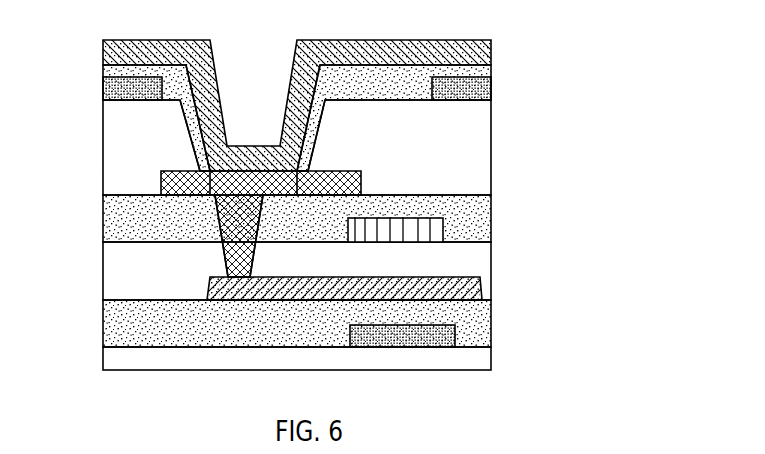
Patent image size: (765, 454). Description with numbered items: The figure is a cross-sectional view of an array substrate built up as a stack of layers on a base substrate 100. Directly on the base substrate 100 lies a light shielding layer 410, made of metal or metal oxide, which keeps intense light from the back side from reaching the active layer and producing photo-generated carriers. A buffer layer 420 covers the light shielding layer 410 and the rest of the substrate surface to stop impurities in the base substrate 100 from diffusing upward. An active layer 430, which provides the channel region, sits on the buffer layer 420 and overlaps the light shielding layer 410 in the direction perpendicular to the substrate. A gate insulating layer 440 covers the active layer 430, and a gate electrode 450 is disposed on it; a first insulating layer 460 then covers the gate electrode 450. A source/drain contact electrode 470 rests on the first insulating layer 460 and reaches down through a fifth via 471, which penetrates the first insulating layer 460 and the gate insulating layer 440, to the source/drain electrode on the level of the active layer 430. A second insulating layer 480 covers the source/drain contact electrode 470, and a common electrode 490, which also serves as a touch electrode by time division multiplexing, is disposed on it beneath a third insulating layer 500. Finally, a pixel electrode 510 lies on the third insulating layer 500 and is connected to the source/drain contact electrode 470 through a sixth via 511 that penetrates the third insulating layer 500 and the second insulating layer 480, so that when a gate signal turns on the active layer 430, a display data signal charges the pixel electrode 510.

The base substrate 100 is at (458, 358).
The light shielding layer 410 is at (412, 334).
The buffer layer 420 is at (458, 310).
The active layer 430 is at (460, 288).
The gate insulating layer 440 is at (457, 259).
The gate electrode 450 is at (420, 228).
The first insulating layer 460 is at (457, 205).
The source/drain contact electrode 470 is at (362, 183).
The fifth via 471 is at (232, 228).
The second insulating layer 480 is at (458, 147).
The common electrode 490 is at (452, 89).
The third insulating layer 500 is at (400, 73).
The pixel electrode 510 is at (455, 50).
The sixth via 511 is at (200, 135).